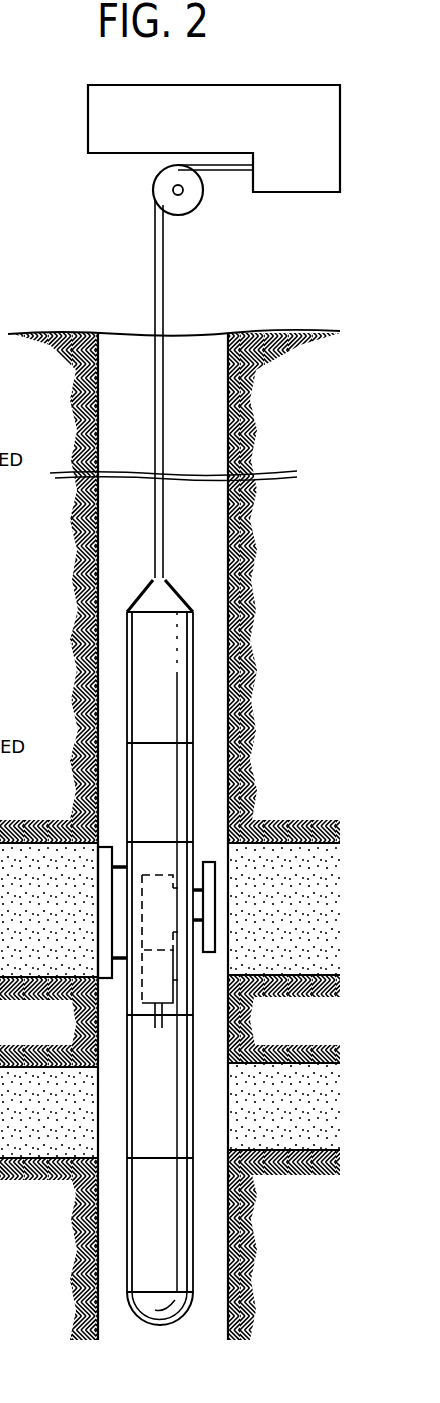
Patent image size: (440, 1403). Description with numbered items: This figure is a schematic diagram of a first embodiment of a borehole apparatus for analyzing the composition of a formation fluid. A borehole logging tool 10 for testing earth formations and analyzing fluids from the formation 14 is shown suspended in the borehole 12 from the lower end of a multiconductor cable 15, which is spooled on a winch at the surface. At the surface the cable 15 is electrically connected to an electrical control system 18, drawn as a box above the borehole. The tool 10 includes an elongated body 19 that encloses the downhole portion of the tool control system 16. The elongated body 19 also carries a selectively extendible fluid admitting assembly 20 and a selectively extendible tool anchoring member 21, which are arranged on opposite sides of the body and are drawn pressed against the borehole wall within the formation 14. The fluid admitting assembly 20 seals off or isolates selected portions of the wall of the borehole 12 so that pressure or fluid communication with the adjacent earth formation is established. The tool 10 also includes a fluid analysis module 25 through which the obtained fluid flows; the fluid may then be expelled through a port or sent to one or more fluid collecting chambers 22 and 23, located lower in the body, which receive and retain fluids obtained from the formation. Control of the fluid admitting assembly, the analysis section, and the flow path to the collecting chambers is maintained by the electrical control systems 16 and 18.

The borehole logging tool 10 is at (200, 770).
The borehole 12 is at (245, 411).
The formation 14 is at (312, 1122).
The multiconductor cable 15 is at (154, 243).
The tool control system 16 is at (165, 785).
The electrical control system 18 is at (305, 193).
The elongated body 19 is at (170, 648).
The fluid admitting assembly 20 is at (216, 877).
The tool anchoring member 21 is at (110, 893).
The fluid collecting chamber 22 is at (170, 1122).
The fluid collecting chamber 23 is at (170, 1232).
The fluid analysis module 25 is at (183, 982).